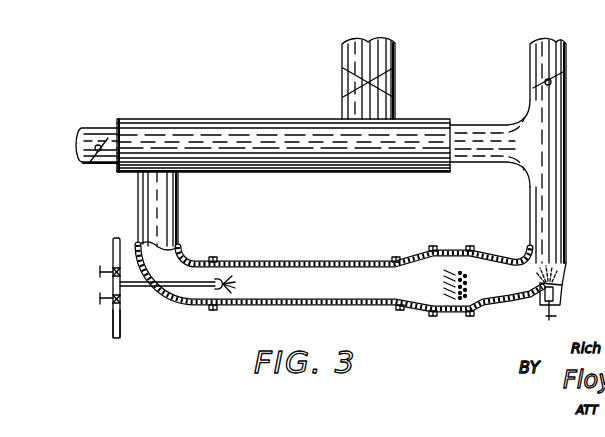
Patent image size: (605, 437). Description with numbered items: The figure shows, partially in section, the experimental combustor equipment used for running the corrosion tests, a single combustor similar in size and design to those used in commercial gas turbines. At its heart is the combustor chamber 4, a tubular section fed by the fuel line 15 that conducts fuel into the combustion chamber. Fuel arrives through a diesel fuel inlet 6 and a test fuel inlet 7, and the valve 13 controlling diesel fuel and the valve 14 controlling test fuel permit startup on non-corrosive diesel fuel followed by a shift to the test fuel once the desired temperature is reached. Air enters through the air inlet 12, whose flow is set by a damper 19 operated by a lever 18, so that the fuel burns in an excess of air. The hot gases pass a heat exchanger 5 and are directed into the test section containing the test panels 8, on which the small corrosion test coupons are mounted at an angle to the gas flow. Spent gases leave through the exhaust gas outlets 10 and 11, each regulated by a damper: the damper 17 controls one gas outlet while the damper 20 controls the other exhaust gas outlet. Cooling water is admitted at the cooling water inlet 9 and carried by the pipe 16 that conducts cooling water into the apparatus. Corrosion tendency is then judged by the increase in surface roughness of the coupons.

The combustor chamber 4 is at (268, 283).
The heat exchanger 5 is at (312, 157).
The diesel fuel inlet 6 is at (113, 249).
The test fuel inlet 7 is at (120, 325).
The test panels 8 is at (457, 258).
The cooling water inlet 9 is at (549, 321).
The exhaust gas outlet 10 is at (549, 12).
The exhaust gas outlet 11 is at (75, 148).
The air inlet 12 is at (367, 15).
The valve to control flow of diesel fuel 13 is at (113, 274).
The valve to control flow of test fuel 14 is at (113, 300).
The fuel line to combustion chamber 15 is at (126, 287).
The pipe to conduct cooling water 16 is at (545, 310).
The damper to control gas outlet 17 is at (99, 145).
The lever 18 is at (343, 82).
The damper to control air inlet 19 is at (393, 82).
The damper to control exhaust gas outlet 20 is at (551, 82).